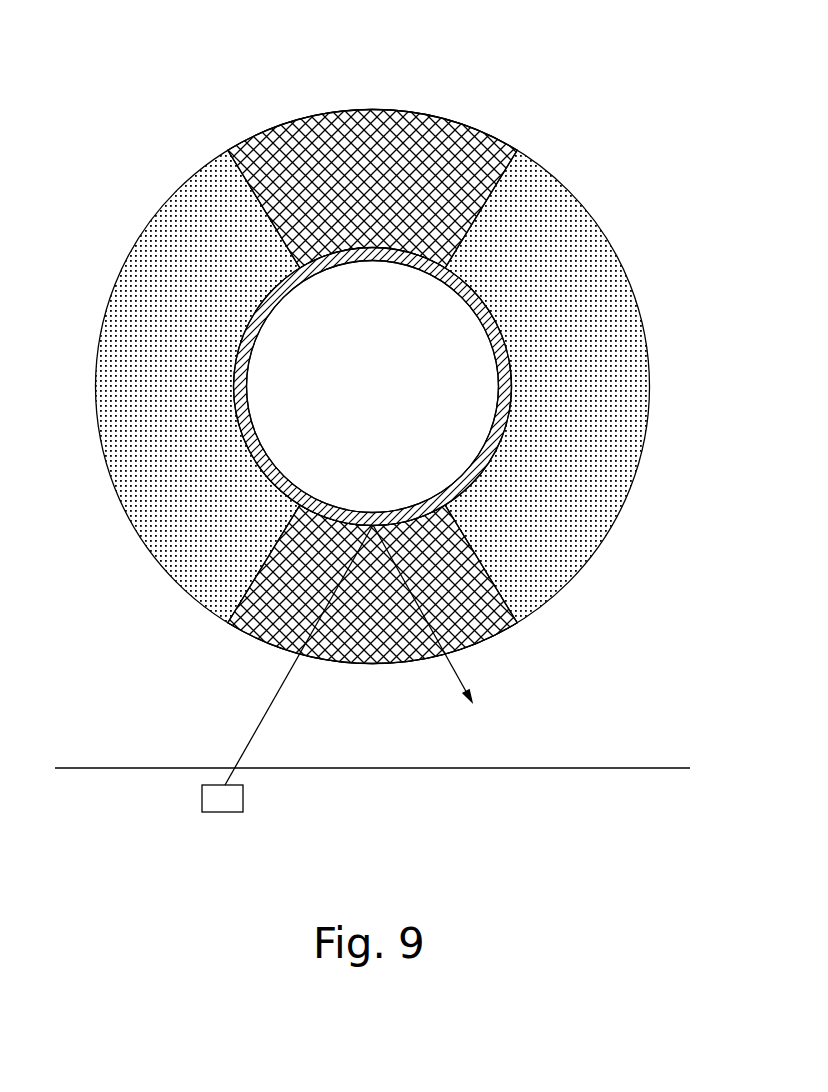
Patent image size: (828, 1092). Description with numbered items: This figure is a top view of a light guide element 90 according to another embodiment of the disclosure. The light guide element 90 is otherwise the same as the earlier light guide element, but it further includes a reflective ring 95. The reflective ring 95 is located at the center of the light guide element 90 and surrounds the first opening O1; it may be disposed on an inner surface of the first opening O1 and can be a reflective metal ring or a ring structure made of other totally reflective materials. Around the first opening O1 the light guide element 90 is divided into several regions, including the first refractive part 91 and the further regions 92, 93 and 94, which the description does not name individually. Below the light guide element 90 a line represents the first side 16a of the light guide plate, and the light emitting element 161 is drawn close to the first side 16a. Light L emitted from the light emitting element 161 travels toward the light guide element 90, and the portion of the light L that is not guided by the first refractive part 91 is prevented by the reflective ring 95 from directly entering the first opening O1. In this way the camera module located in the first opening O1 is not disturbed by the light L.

The light guide element 90 is at (58, 41).
The first refractive part 91 is at (186, 399).
The second light-transmitting region 92 is at (589, 399).
The first light-shielding region 93 is at (388, 606).
The second light-shielding region 94 is at (387, 191).
The reflective ring 95 is at (251, 326).
The first opening O1 is at (457, 323).
The light L is at (453, 670).
The light emitting element 161 is at (222, 803).
The first side 16a is at (642, 772).